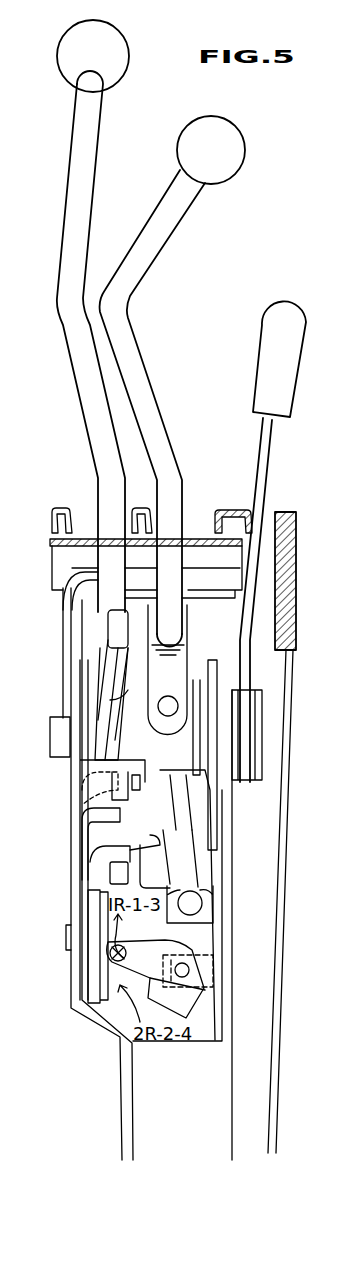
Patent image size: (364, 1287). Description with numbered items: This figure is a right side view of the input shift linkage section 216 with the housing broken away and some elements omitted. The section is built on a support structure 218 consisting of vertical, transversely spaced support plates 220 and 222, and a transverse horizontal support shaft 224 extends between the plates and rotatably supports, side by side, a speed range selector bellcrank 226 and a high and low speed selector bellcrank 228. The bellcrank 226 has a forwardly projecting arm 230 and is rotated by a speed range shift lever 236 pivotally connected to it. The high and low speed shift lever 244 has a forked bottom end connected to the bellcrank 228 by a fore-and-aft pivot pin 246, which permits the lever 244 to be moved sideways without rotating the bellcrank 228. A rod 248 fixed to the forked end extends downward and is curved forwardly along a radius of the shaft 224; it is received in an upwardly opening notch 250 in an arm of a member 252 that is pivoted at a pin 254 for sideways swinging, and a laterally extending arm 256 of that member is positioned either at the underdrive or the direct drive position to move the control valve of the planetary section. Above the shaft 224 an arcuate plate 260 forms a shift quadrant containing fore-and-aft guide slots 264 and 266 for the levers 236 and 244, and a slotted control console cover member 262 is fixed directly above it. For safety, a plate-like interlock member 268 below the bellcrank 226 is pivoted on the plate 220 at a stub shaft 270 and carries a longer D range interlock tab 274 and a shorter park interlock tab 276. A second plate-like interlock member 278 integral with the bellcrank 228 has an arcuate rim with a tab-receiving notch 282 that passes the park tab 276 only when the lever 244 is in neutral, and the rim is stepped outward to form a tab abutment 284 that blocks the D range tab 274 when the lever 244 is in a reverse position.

The input shift linkage section 216 is at (238, 293).
The support structure 218 is at (63, 794).
The support plate 220 is at (72, 841).
The support plate 222 is at (226, 858).
The support shaft 224 is at (50, 731).
The speed range selector bellcrank 226 is at (100, 753).
The high and low speed selector bellcrank 228 is at (185, 768).
The arm 230 is at (112, 625).
The speed range shift lever 236 is at (68, 203).
The high and low speed shift lever 244 is at (170, 193).
The pivot pin 246 is at (170, 697).
The rod 248 is at (185, 843).
The notch 250 is at (200, 912).
The member 252 is at (190, 1000).
The pin 254 is at (188, 972).
The arm 256 is at (110, 958).
The arcuate plate 260 is at (50, 541).
The control console cover member 262 is at (58, 509).
The guide slot 264 is at (84, 546).
The guide slot 266 is at (203, 540).
The interlock member 268 is at (95, 904).
The stub shaft 270 is at (66, 936).
The D range interlock tab 274 is at (100, 798).
The park interlock tab 276 is at (104, 863).
The second interlock member 278 is at (160, 868).
The tab-receiving notch 282 is at (146, 840).
The tab abutment 284 is at (114, 874).